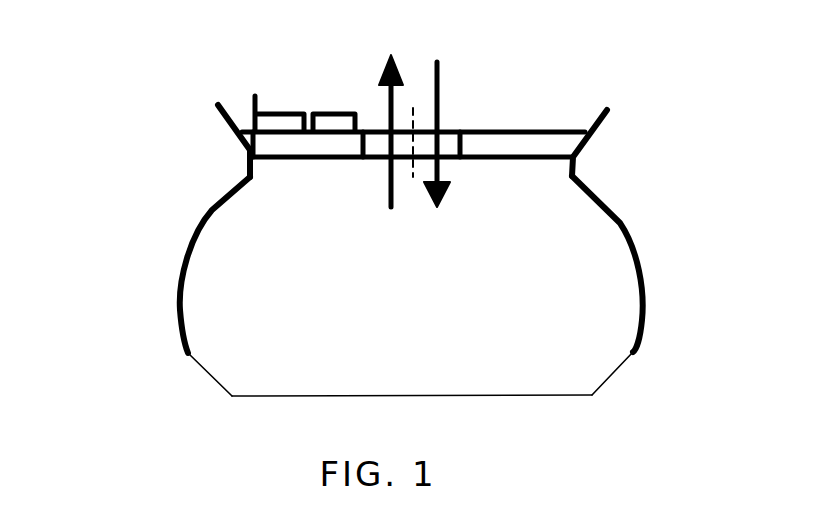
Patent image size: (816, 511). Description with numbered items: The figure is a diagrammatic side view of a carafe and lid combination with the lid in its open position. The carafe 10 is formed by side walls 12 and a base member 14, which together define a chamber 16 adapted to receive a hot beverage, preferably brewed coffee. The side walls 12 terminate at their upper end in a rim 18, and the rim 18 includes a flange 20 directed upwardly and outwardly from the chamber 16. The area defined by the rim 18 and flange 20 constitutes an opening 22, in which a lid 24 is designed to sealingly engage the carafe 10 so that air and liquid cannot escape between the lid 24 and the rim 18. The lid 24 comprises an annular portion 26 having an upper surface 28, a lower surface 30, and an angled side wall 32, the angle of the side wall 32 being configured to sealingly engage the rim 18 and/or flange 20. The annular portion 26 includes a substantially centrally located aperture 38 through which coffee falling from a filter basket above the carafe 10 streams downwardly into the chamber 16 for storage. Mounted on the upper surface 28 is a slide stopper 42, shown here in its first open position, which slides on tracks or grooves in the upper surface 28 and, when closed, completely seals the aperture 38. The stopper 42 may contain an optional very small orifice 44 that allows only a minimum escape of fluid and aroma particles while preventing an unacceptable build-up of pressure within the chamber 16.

The carafe 10 is at (131, 270).
The side walls 12 is at (642, 275).
The base member 14 is at (572, 397).
The chamber 16 is at (493, 365).
The rim 18 is at (578, 172).
The flange 20 is at (603, 123).
The opening 22 is at (332, 172).
The lid 24 is at (247, 147).
The annular portion 26 is at (227, 188).
The upper surface 28 is at (510, 130).
The lower surface 30 is at (495, 157).
The angled side wall 32 is at (573, 145).
The aperture 38 is at (372, 125).
The slide stopper 42 is at (283, 112).
The orifice 44 is at (308, 112).